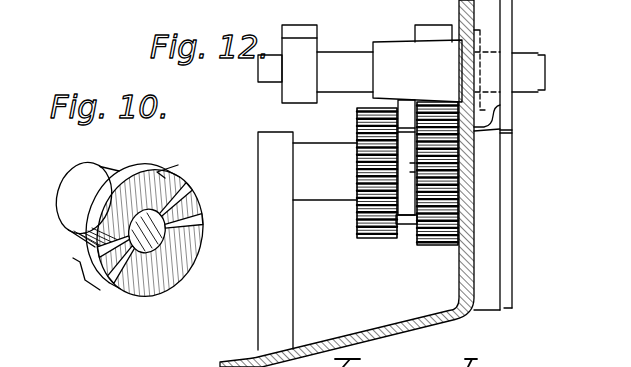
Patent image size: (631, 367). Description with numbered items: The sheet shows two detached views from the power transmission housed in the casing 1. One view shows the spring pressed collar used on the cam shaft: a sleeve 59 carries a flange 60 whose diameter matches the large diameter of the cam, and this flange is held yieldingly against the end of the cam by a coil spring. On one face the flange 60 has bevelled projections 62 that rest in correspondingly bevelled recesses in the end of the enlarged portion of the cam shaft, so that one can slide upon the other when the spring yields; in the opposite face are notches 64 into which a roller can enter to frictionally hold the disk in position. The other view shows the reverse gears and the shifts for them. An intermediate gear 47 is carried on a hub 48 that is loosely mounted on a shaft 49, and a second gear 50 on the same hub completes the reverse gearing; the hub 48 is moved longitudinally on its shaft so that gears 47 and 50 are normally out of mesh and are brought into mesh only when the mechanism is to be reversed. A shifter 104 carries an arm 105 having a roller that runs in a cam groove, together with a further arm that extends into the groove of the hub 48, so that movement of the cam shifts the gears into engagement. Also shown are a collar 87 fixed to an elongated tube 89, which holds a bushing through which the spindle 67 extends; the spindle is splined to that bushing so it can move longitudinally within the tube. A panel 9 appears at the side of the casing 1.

In FIG. 12, the casing 1 is at (458, 302).
In FIG. 12, the panel 9 is at (506, 155).
In FIG. 12, the intermediate gear 47 is at (440, 245).
In FIG. 12, the hub 48 is at (407, 225).
In FIG. 12, the shaft 49 is at (325, 185).
In FIG. 12, the second gear 50 is at (373, 237).
In FIG. 10, the sleeve 59 is at (67, 190).
In FIG. 10, the flange 60 is at (118, 172).
In FIG. 10, the projections 62 is at (200, 213).
In FIG. 10, the notches 64 is at (157, 172).
In FIG. 12, the spindle 67 is at (258, 68).
In FIG. 12, the collar 87 is at (292, 85).
In FIG. 12, the elongated tube 89 is at (338, 53).
In FIG. 12, the shifter 104 is at (417, 71).
In FIG. 12, the arm 105 is at (435, 43).